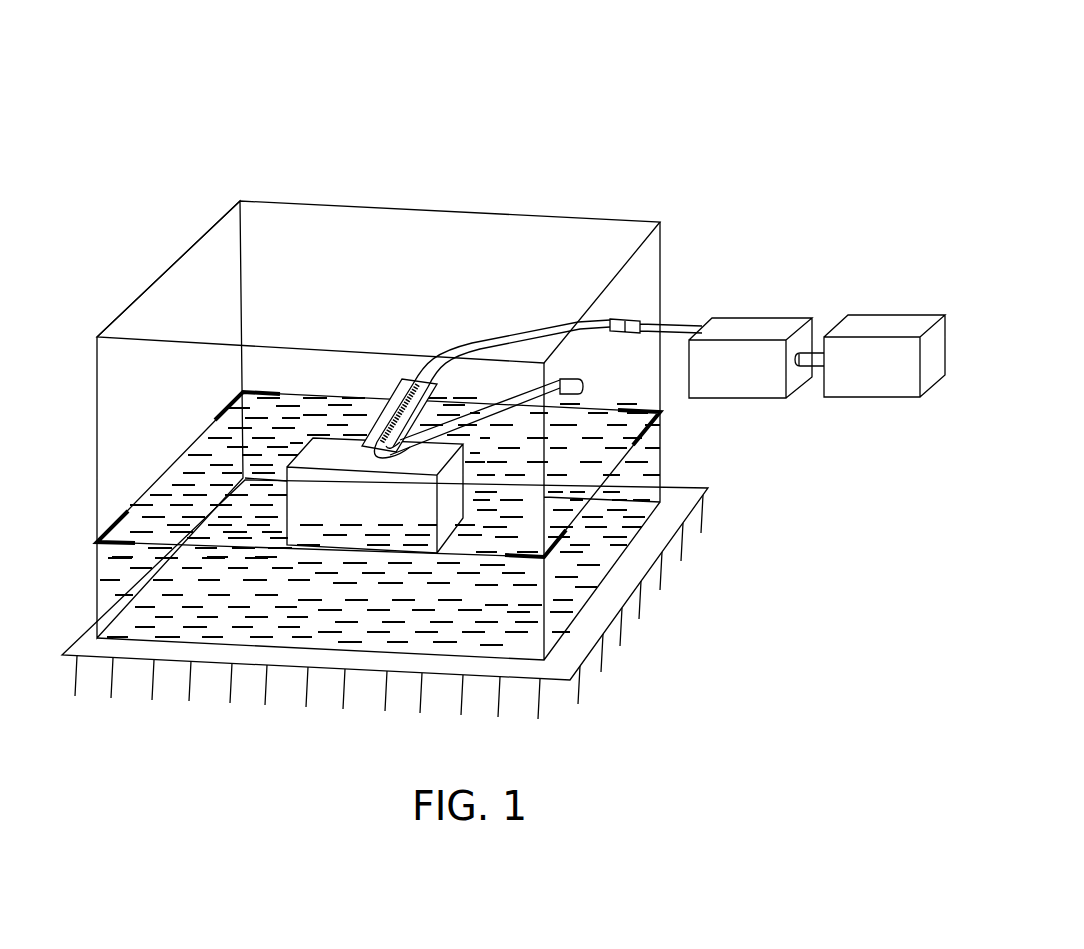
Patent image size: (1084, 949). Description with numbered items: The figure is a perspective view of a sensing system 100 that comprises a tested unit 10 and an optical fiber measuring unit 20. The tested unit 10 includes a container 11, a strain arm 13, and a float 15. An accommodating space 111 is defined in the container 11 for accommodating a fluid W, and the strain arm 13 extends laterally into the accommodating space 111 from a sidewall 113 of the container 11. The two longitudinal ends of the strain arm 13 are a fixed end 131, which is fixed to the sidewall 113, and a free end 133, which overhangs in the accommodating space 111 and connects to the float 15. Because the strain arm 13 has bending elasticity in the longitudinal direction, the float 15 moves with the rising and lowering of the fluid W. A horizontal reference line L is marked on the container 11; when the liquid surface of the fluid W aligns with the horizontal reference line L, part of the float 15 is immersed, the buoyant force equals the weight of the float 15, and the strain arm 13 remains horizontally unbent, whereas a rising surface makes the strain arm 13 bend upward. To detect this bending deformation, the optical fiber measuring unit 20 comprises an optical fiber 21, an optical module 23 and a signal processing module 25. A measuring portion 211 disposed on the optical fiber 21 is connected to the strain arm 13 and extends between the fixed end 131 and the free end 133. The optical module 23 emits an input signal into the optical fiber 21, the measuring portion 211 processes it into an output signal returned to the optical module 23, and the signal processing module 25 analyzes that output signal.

The sensing system 100 is at (663, 39).
The tested unit 10 is at (556, 136).
The container 11 is at (238, 200).
The accommodating space 111 is at (158, 302).
The sidewall 113 is at (302, 209).
The strain arm 13 is at (405, 384).
The fixed end 131 is at (438, 386).
The free end 133 is at (376, 456).
The float 15 is at (306, 457).
The optical fiber measuring unit 20 is at (810, 242).
The optical fiber 21 is at (518, 340).
The measuring portion 211 is at (402, 390).
The optical module 23 is at (755, 326).
The signal processing module 25 is at (883, 326).
The fluid W is at (168, 487).
The horizontal reference line L is at (105, 542).